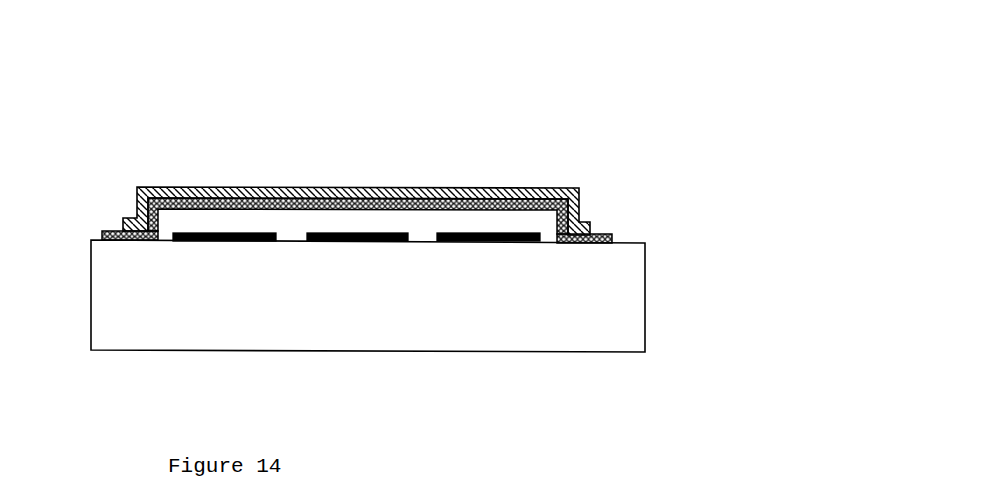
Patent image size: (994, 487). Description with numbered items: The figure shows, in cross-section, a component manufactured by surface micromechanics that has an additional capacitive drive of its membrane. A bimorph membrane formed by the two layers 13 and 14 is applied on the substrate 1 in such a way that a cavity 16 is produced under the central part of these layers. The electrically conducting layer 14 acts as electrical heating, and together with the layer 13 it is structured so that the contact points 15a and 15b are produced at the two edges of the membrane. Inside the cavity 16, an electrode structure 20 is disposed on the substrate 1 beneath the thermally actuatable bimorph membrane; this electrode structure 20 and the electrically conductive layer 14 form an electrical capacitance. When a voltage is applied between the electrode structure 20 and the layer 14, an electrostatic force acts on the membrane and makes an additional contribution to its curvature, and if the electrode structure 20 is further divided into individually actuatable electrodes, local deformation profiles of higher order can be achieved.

The substrate 1 is at (602, 298).
The layer 13 is at (523, 187).
The electrically conducting layer 14 is at (580, 201).
The contact point 15a is at (102, 231).
The contact point 15b is at (607, 238).
The cavity 16 is at (298, 230).
The electrode structure 20 is at (488, 242).